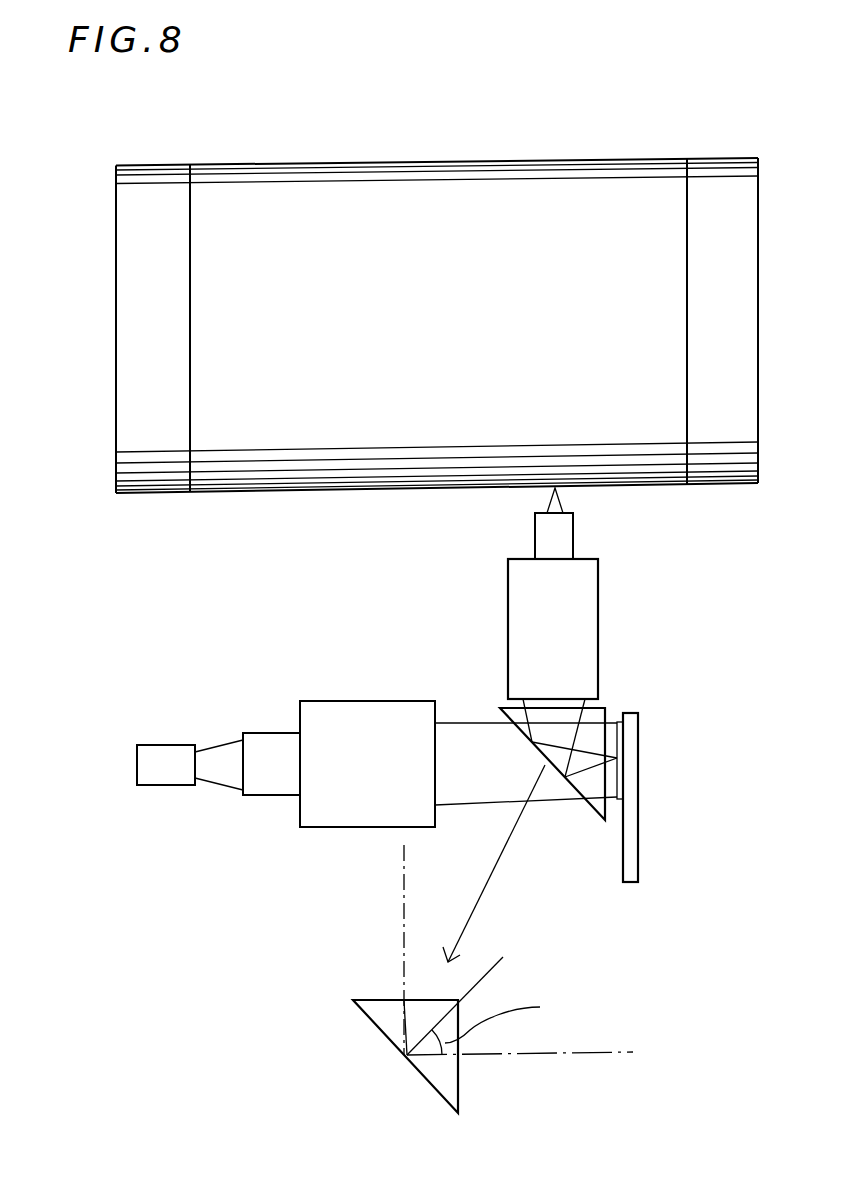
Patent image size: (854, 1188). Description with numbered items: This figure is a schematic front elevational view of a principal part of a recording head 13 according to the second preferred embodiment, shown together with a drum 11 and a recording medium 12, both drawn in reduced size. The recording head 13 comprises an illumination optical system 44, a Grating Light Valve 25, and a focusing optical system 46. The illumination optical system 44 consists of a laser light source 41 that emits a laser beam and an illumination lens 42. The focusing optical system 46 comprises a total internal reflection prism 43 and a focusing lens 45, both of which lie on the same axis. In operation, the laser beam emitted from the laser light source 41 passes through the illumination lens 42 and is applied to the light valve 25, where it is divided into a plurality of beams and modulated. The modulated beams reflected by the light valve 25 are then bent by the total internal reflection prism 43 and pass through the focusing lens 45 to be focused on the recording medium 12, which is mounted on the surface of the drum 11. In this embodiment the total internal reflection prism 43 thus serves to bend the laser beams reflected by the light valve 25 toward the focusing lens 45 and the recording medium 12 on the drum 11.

The drum 11 is at (735, 472).
The recording medium 12 is at (661, 478).
The recording head 13 is at (283, 872).
The Grating Light Valve 25 is at (640, 759).
The laser light source 41 is at (165, 752).
The illumination lens 42 is at (340, 712).
The total internal reflection prism 43 is at (600, 712).
The illumination optical system 44 is at (320, 640).
The focusing lens 45 is at (588, 602).
The focusing optical system 46 is at (680, 590).